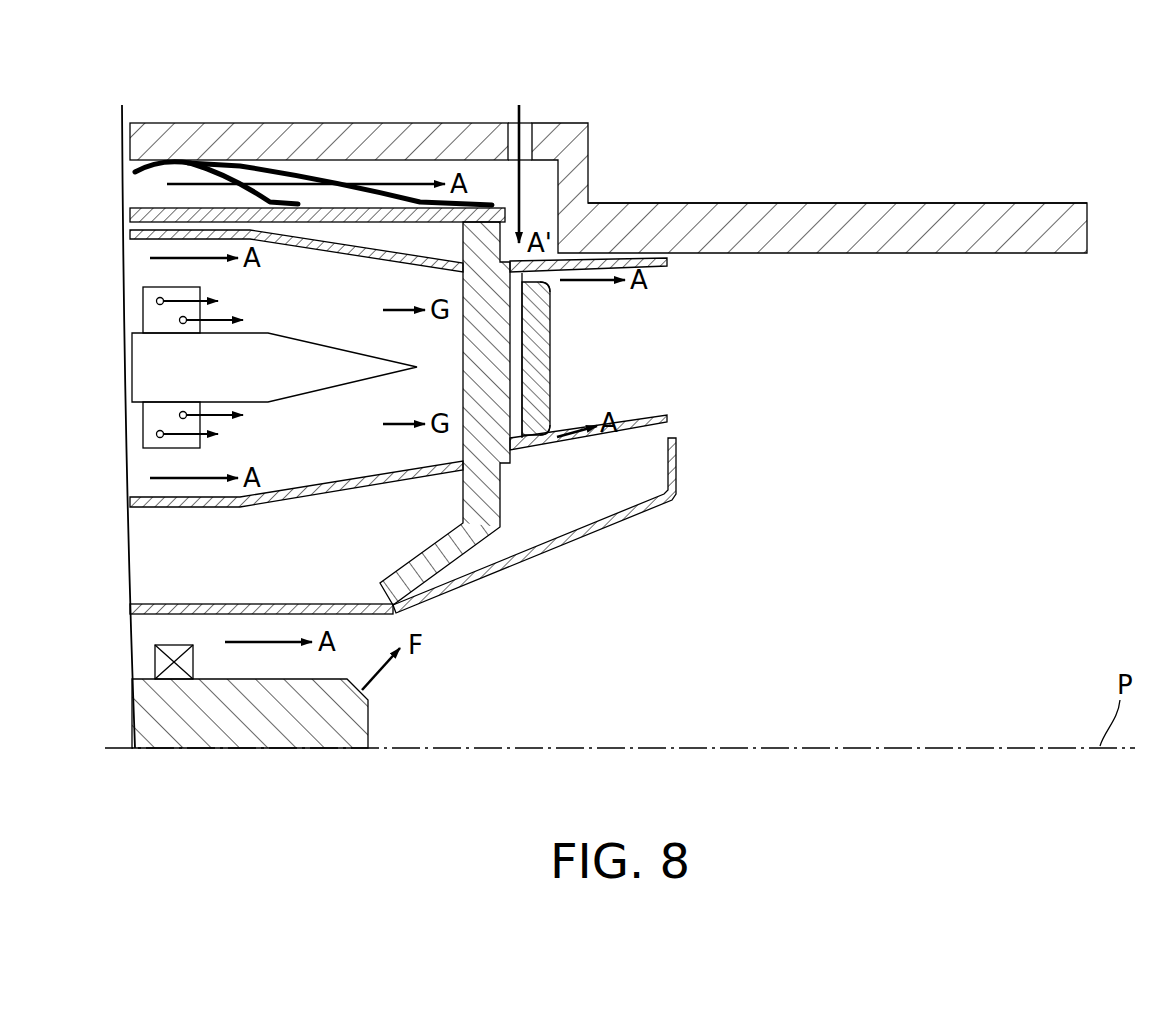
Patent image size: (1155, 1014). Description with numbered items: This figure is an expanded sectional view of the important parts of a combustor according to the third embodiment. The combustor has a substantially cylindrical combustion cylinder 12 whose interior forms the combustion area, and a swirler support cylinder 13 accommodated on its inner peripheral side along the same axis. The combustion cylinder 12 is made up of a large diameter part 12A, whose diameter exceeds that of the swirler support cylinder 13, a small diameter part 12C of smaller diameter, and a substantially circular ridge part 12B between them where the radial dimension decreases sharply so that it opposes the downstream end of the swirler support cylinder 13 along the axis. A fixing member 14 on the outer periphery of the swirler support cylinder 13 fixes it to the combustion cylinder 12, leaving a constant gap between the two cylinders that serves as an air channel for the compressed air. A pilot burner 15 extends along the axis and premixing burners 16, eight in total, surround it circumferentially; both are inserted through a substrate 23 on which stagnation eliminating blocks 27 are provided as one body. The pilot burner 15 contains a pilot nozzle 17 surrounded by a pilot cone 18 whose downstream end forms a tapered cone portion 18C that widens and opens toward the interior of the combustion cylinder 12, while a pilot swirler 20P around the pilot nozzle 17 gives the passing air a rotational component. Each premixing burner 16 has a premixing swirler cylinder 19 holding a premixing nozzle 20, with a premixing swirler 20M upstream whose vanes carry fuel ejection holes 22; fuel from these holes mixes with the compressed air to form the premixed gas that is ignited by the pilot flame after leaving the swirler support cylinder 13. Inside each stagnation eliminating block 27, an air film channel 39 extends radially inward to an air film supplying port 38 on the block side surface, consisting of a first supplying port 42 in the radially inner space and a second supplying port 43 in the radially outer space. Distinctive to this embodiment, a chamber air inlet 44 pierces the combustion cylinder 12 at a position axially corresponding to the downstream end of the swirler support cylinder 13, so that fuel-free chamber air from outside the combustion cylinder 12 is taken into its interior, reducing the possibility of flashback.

The combustion cylinder 12 is at (907, 190).
The large diameter part 12A is at (345, 133).
The ridge part 12B is at (590, 178).
The small diameter part 12C is at (755, 215).
The swirler support cylinder 13 is at (497, 208).
The fixing member 14 is at (193, 162).
The pilot burner 15 is at (464, 708).
The premixing burner 16 is at (772, 356).
The pilot nozzle 17 is at (330, 748).
The pilot cone 18 is at (670, 507).
The tapered cone portion 18C is at (592, 530).
The premixing swirler cylinder 19 is at (215, 508).
The premixing nozzle 20 is at (318, 355).
The premixing swirler 20M is at (180, 287).
The pilot swirler 20P is at (193, 660).
The fuel ejection holes 22 is at (180, 321).
The substrate 23 is at (470, 548).
The stagnation eliminating block 27 is at (667, 265).
The air film supplying port 38 is at (598, 358).
The air film channel 39 is at (527, 368).
The first supplying port 42 is at (556, 432).
The second supplying port 43 is at (553, 284).
The chamber air inlet 44 is at (525, 131).